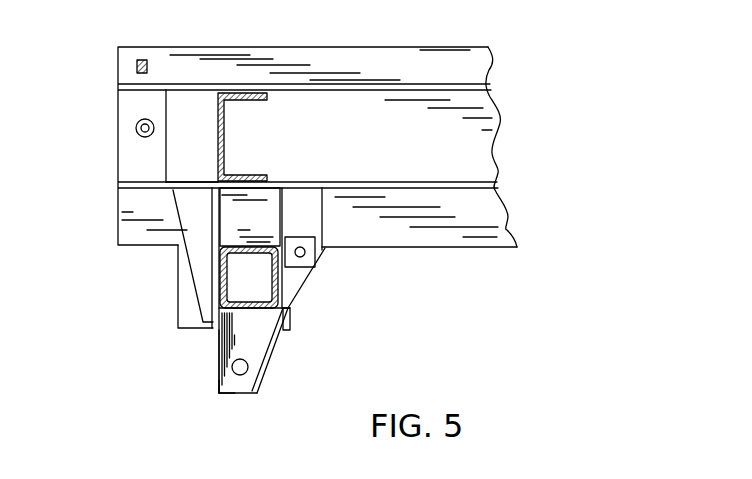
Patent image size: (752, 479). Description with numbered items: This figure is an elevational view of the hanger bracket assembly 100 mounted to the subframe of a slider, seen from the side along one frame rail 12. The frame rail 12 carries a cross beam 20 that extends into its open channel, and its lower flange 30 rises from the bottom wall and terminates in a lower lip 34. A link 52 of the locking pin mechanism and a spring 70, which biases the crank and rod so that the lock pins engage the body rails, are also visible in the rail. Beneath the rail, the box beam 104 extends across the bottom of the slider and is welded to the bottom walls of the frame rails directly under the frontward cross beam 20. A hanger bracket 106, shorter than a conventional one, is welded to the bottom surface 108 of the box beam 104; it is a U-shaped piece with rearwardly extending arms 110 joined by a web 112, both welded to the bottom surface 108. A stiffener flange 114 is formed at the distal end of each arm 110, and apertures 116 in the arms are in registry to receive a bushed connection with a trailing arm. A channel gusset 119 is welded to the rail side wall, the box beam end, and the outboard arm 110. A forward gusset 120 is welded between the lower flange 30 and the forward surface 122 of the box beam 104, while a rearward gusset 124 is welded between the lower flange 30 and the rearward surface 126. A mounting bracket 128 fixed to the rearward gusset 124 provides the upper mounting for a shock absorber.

The frame rail 12 is at (109, 150).
The cross beam 20 is at (226, 136).
The lower flange 30 is at (453, 223).
The lower lip 34 is at (175, 181).
The link 52 is at (139, 59).
The spring 70 is at (135, 127).
The hanger bracket assembly 100 is at (148, 336).
The box beam 104 is at (232, 247).
The hanger bracket 106 is at (207, 377).
The bottom surface 108 is at (252, 308).
The arm 110 is at (245, 388).
The web 112 is at (218, 387).
The stiffener flange 114 is at (268, 357).
The aperture 116 is at (238, 375).
The channel gusset 119 is at (185, 290).
The forward gusset 120 is at (192, 223).
The forward surface 122 is at (224, 274).
The rearward gusset 124 is at (302, 202).
The rearward surface 126 is at (278, 288).
The mounting bracket 128 is at (306, 256).